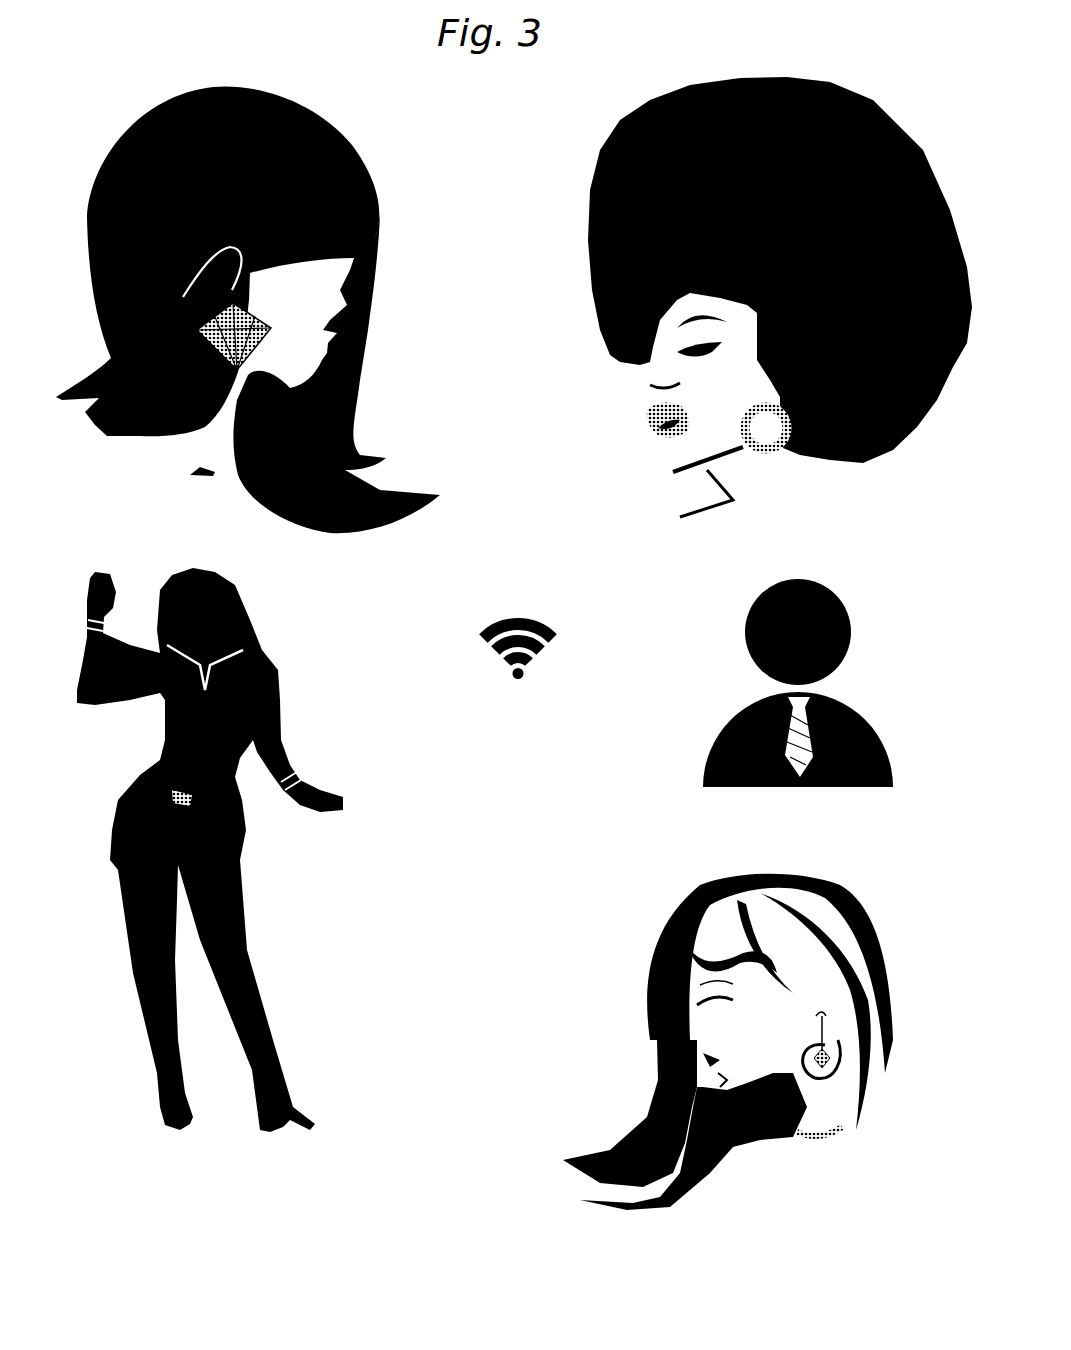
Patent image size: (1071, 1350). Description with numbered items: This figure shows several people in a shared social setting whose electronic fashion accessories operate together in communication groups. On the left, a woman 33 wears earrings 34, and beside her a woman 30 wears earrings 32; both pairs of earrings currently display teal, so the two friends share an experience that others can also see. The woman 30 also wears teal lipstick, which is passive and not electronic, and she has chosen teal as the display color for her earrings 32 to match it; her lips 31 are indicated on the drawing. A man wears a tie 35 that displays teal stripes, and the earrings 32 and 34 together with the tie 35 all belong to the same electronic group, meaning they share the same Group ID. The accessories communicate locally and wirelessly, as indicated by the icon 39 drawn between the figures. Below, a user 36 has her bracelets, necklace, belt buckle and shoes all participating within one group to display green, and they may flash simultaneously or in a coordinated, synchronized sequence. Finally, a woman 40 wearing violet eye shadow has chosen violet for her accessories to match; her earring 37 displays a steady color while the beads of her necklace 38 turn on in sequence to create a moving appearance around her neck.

The woman 30 is at (665, 190).
The lips 31 is at (657, 425).
The earrings 32 is at (773, 453).
The woman 33 is at (303, 150).
The earrings 34 is at (224, 382).
The tie 35 is at (795, 740).
The user 36 is at (207, 830).
The earring 37 is at (828, 1060).
The necklace 38 is at (822, 1140).
The icon 39 is at (513, 647).
The woman 40 is at (715, 922).